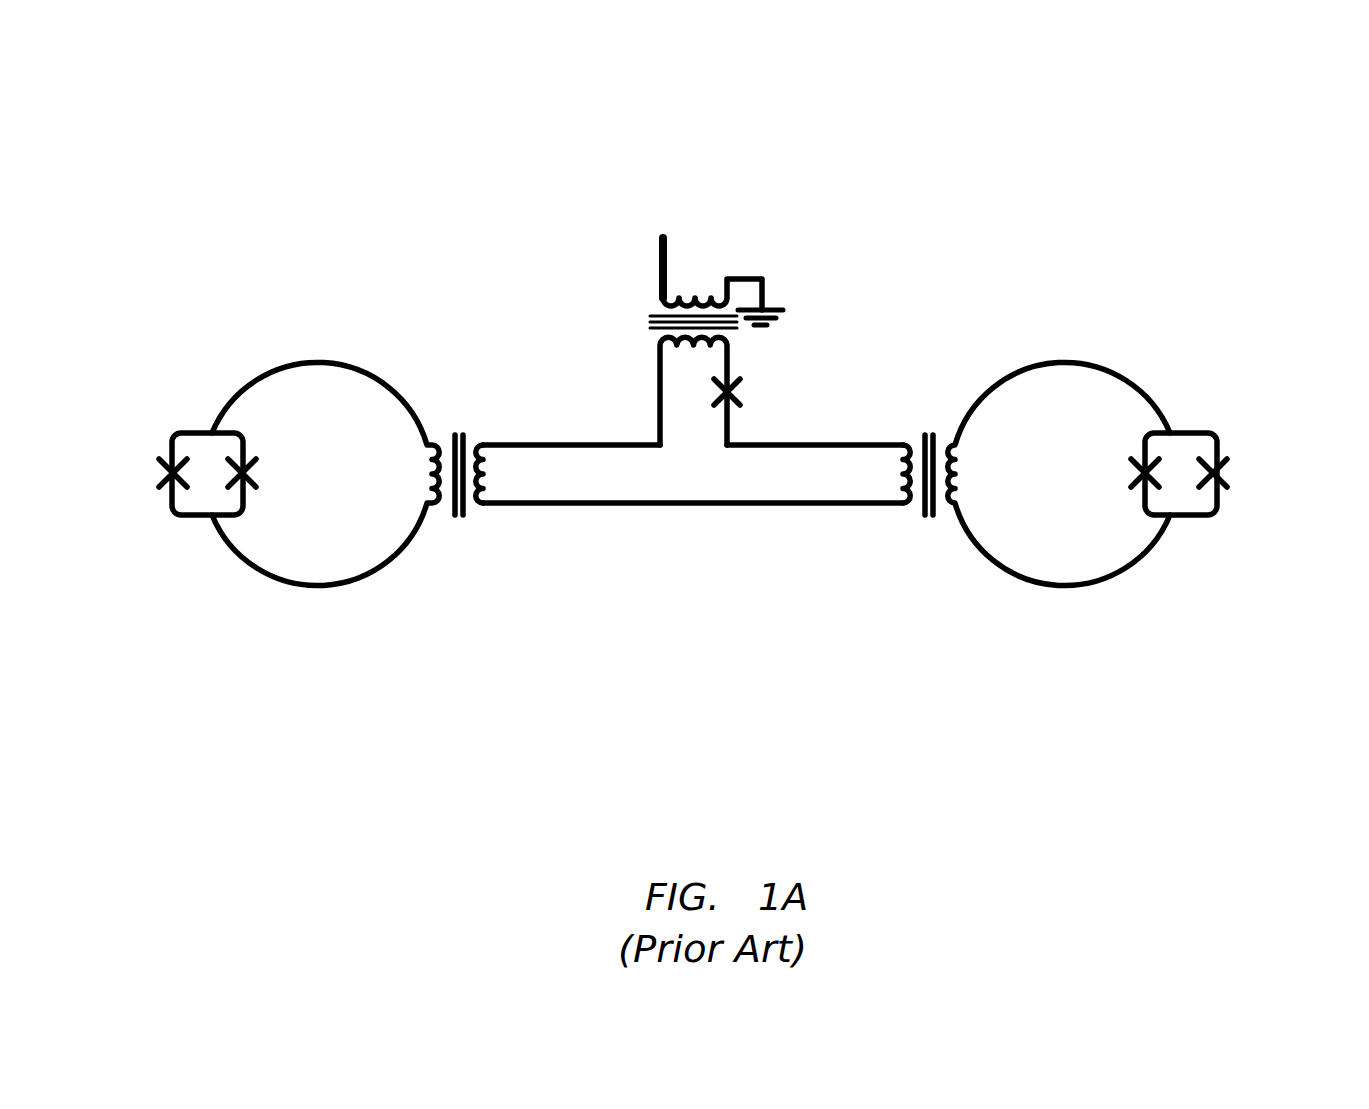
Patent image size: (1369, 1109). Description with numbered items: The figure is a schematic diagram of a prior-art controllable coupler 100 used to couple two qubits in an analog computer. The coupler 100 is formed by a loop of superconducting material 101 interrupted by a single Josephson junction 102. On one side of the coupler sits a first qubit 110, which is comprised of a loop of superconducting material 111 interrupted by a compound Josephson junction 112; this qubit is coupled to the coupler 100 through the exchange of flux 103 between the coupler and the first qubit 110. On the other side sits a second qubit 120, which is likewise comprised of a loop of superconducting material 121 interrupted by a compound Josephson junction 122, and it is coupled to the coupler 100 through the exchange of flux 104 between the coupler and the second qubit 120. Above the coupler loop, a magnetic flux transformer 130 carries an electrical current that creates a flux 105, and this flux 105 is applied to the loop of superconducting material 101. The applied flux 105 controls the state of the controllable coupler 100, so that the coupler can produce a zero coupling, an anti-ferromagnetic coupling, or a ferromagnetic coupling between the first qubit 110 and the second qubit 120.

The controllable coupler 100 is at (626, 566).
The loop of superconducting material 101 is at (585, 419).
The Josephson junction 102 is at (747, 352).
The exchange of flux 103 is at (461, 543).
The exchange of flux 104 is at (929, 543).
The flux 105 is at (650, 289).
The first qubit 110 is at (215, 589).
The loop of superconducting material 111 is at (280, 343).
The compound Josephson junction 112 is at (181, 410).
The second qubit 120 is at (1150, 592).
The loop of superconducting material 121 is at (1125, 348).
The compound Josephson junction 122 is at (1198, 410).
The magnetic flux transformer 130 is at (705, 239).